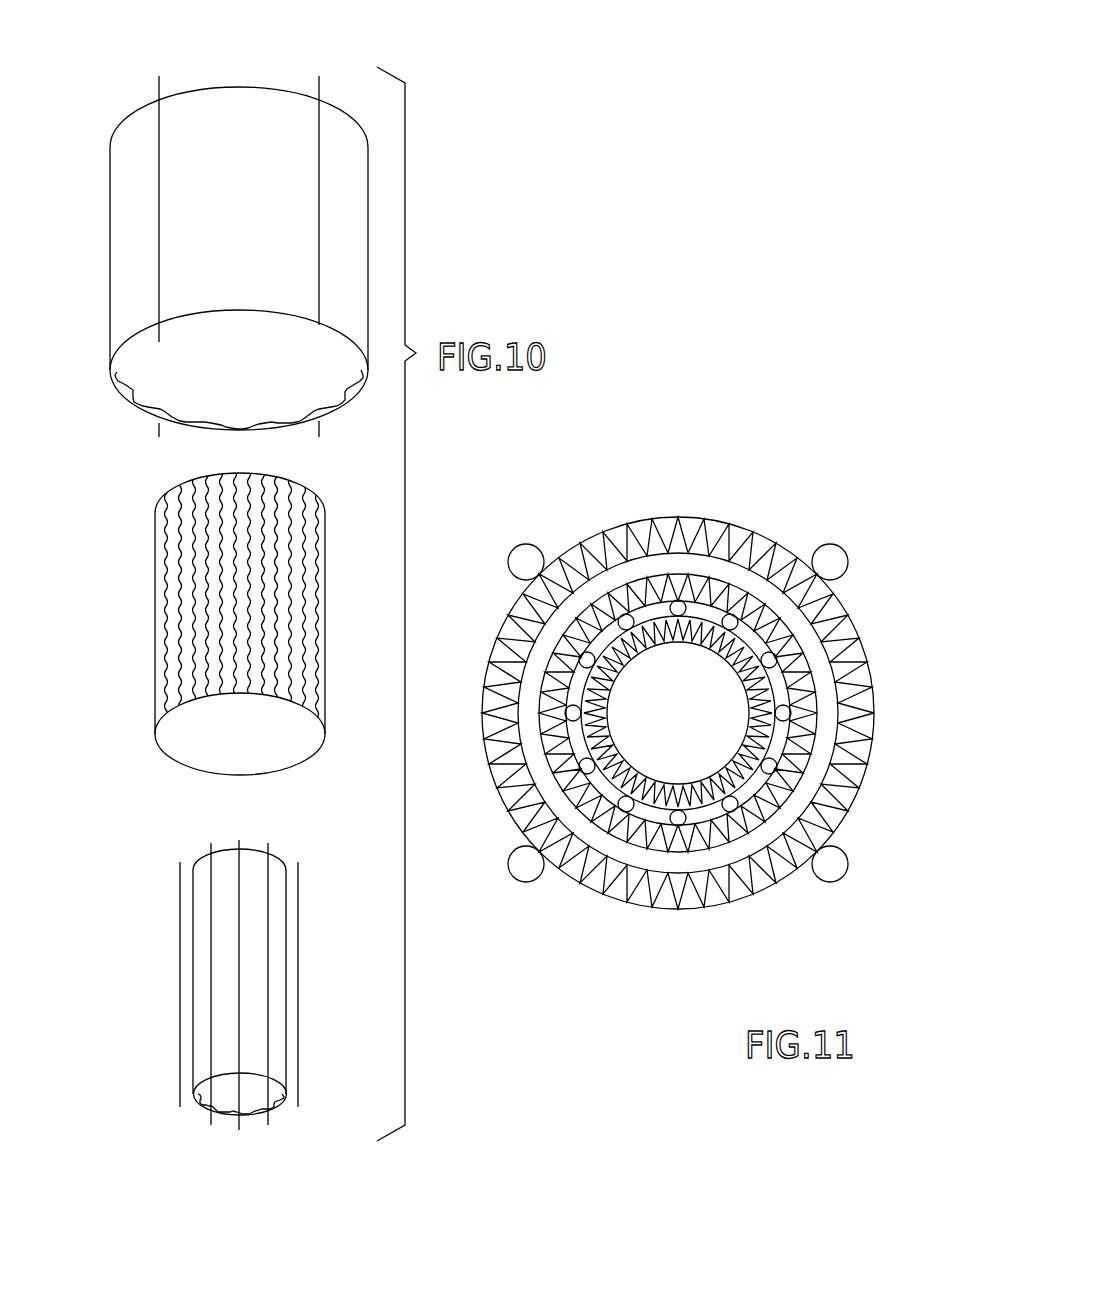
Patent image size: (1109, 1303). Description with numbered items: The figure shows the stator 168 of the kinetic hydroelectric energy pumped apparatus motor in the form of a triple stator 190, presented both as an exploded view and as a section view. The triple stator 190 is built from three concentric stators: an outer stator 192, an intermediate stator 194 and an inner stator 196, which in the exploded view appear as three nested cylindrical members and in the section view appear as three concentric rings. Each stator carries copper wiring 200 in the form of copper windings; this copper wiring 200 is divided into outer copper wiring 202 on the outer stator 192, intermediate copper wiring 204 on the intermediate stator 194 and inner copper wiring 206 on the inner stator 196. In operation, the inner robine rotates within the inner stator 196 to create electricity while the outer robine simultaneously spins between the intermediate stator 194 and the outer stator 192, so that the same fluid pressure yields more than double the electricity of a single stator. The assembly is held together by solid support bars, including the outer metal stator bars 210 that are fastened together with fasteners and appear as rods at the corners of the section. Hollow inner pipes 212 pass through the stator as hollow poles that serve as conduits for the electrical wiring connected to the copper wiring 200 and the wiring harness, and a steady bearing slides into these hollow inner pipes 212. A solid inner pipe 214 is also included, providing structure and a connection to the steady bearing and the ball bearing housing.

In FIG. 10, the stator 168 is at (230, 602).
In FIG. 11, the stator 168 is at (692, 702).
In FIG. 10, the triple stator 190 is at (165, 56).
In FIG. 11, the triple stator 190 is at (578, 488).
In FIG. 10, the outer stator 192 is at (117, 392).
In FIG. 10, the intermediate stator 194 is at (157, 716).
In FIG. 10, the inner stator 196 is at (203, 1106).
In FIG. 11, the inner stator 196 is at (722, 713).
In FIG. 10, the copper wiring 200 is at (204, 773).
In FIG. 11, the copper wiring 200 is at (722, 713).
In FIG. 10, the outer copper wiring 202 is at (148, 398).
In FIG. 11, the outer copper wiring 202 is at (835, 595).
In FIG. 10, the intermediate copper wiring 204 is at (176, 672).
In FIG. 11, the intermediate copper wiring 204 is at (820, 722).
In FIG. 10, the inner copper wiring 206 is at (224, 1116).
In FIG. 11, the inner copper wiring 206 is at (775, 745).
In FIG. 10, the outer metal stator bars 210 is at (159, 90).
In FIG. 11, the outer metal stator bars 210 is at (524, 545).
In FIG. 10, the hollow inner pipes 212 is at (240, 842).
In FIG. 11, the hollow inner pipes 212 is at (678, 600).
In FIG. 10, the solid inner pipe 214 is at (203, 862).
In FIG. 11, the solid inner pipe 214 is at (622, 614).